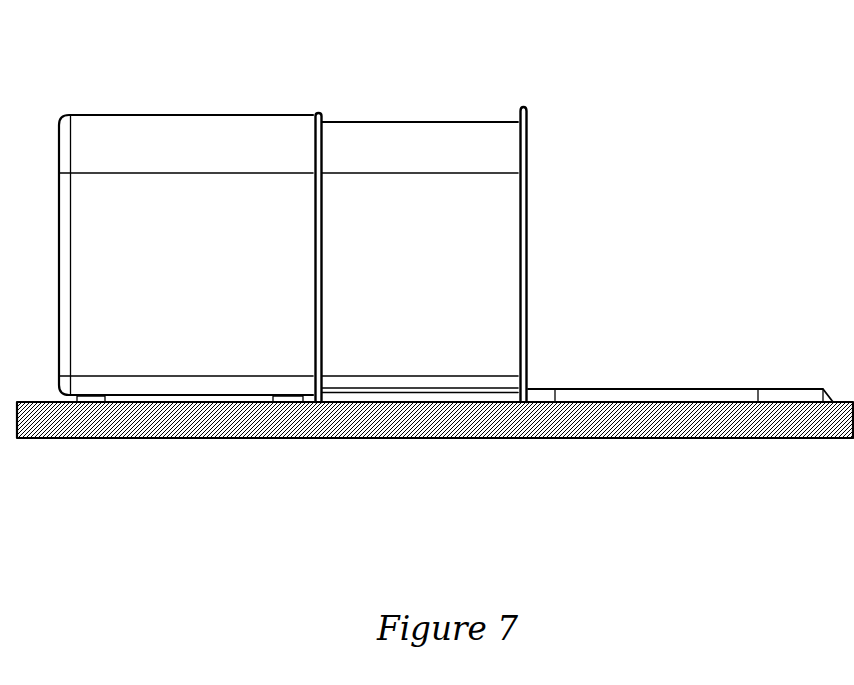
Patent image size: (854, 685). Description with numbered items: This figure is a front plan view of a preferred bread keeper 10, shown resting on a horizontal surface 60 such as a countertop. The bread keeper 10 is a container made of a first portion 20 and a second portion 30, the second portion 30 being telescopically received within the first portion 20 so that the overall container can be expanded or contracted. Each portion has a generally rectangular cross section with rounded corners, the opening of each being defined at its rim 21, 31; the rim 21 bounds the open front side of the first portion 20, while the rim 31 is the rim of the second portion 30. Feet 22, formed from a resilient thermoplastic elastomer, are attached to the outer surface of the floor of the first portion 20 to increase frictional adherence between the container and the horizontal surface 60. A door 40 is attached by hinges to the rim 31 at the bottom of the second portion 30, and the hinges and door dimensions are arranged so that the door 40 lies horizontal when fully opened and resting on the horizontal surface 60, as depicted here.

The bread keeper 10 is at (662, 75).
The first portion 20 is at (168, 145).
The rim 21 is at (318, 112).
The feet 22 is at (95, 403).
The second portion 30 is at (388, 143).
The rim 31 is at (523, 106).
The door 40 is at (673, 388).
The horizontal surface 60 is at (735, 430).